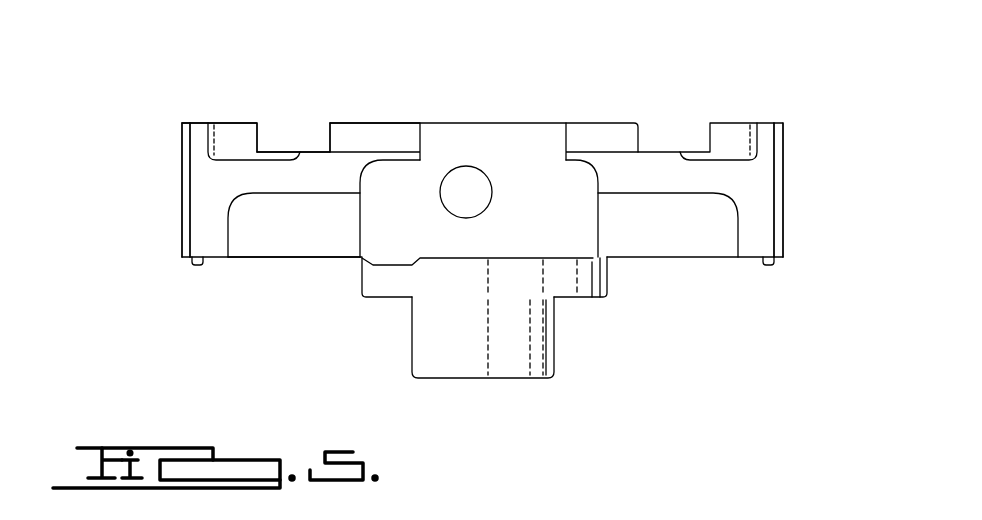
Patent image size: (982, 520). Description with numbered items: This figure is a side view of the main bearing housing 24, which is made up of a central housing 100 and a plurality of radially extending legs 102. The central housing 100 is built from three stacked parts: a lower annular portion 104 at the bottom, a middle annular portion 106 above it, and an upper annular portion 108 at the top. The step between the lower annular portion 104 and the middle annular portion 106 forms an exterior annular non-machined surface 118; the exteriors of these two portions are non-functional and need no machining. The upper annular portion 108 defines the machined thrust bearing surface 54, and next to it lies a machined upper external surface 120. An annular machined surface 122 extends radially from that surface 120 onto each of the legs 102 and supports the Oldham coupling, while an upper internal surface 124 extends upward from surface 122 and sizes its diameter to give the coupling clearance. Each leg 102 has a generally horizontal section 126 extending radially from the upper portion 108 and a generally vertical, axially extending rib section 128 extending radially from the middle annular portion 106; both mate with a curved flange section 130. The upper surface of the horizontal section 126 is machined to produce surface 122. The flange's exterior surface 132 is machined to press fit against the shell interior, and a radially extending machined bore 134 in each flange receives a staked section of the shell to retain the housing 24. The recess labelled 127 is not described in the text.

The main bearing housing 24 is at (698, 80).
The machined thrust bearing surface 54 is at (360, 123).
The central housing 100 is at (392, 318).
The radially extending legs 102 is at (697, 245).
The lower annular portion 104 is at (540, 360).
The middle annular portion 106 is at (380, 278).
The upper annular portion 108 is at (622, 132).
The exterior annular non-machined surface 118 is at (583, 302).
The upper external surface 120 is at (328, 135).
The annular machined surface 122 is at (300, 150).
The upper internal surface 124 is at (272, 130).
The generally horizontal section 126 is at (303, 182).
The recess 127 is at (672, 152).
The rib section 128 is at (317, 235).
The curved flange section 130 is at (203, 182).
The exterior surface 132 is at (785, 175).
The radially extending machined bore 134 is at (465, 182).